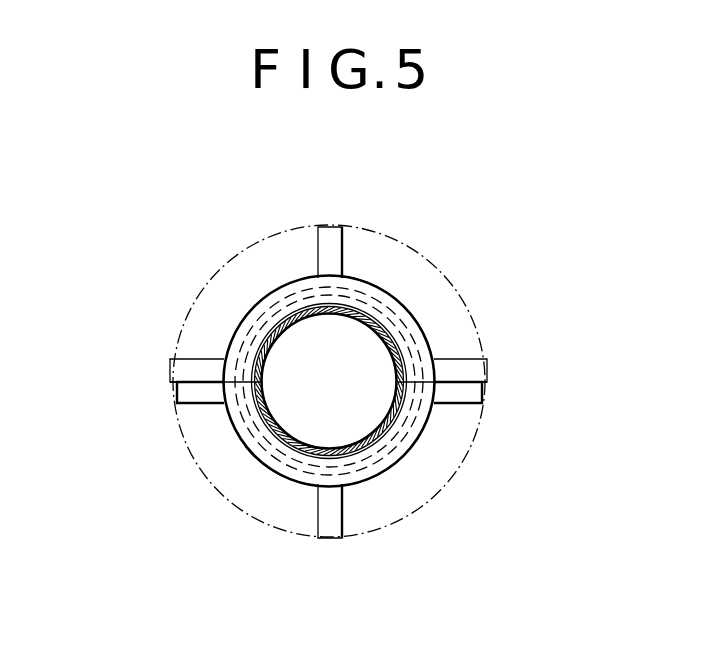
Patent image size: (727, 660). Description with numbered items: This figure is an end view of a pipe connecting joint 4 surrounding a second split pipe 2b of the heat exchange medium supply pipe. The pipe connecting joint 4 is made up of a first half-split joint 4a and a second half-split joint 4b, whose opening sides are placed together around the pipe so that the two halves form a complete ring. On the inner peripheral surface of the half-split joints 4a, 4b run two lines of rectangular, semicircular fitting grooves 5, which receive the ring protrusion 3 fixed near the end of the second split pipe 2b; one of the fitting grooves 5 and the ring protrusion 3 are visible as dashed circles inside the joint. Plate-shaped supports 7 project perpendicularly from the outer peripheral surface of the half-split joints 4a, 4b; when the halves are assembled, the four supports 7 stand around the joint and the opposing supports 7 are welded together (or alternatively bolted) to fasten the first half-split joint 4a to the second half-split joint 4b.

The second split pipe 2b is at (402, 414).
The ring protrusion 3 is at (392, 450).
The pipe connecting joint 4 is at (233, 308).
The first half-split joint 4a is at (408, 309).
The second half-split joint 4b is at (281, 478).
The fitting groove 5 is at (288, 298).
The support 7 is at (342, 253).